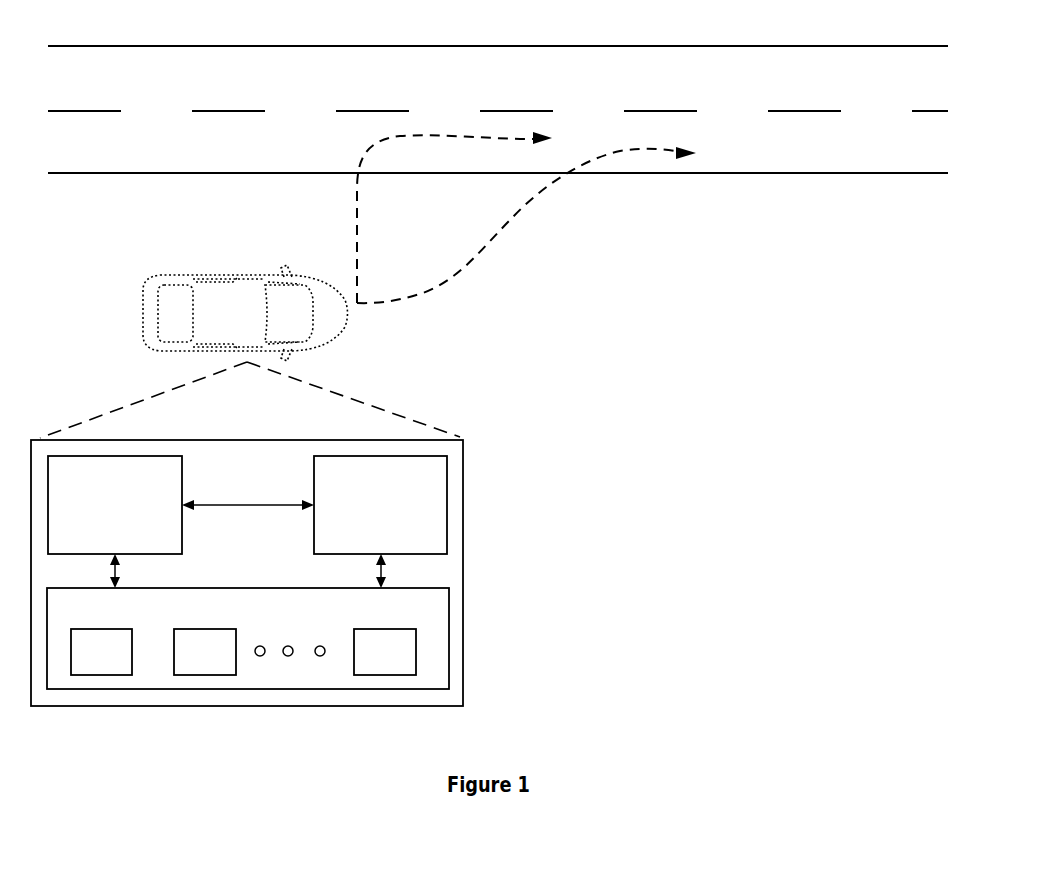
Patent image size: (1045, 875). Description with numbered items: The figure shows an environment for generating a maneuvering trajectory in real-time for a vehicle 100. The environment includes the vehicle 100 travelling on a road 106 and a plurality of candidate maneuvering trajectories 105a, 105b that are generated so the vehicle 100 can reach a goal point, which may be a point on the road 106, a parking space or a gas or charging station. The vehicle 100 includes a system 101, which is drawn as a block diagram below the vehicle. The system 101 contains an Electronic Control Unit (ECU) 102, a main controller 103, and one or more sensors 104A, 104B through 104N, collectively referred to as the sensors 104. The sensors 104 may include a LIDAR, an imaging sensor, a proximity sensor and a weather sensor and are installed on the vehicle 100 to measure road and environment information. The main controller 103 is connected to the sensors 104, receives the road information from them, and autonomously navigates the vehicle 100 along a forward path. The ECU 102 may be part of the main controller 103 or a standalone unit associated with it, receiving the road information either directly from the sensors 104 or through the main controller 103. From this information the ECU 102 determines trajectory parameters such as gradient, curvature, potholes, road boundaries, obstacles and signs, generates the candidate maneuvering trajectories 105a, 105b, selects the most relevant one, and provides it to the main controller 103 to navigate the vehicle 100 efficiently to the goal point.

The vehicle 100 is at (340, 325).
The system 101 is at (463, 494).
The Electronic Control Unit (ECU) 102 is at (115, 505).
The main controller 103 is at (380, 505).
The one or more sensors 104 is at (248, 638).
The sensor 104A is at (101, 652).
The sensor 104B is at (205, 652).
The sensor 104N is at (385, 652).
The candidate maneuvering trajectory 105a is at (513, 215).
The candidate maneuvering trajectory 105b is at (354, 190).
The road 106 is at (840, 173).